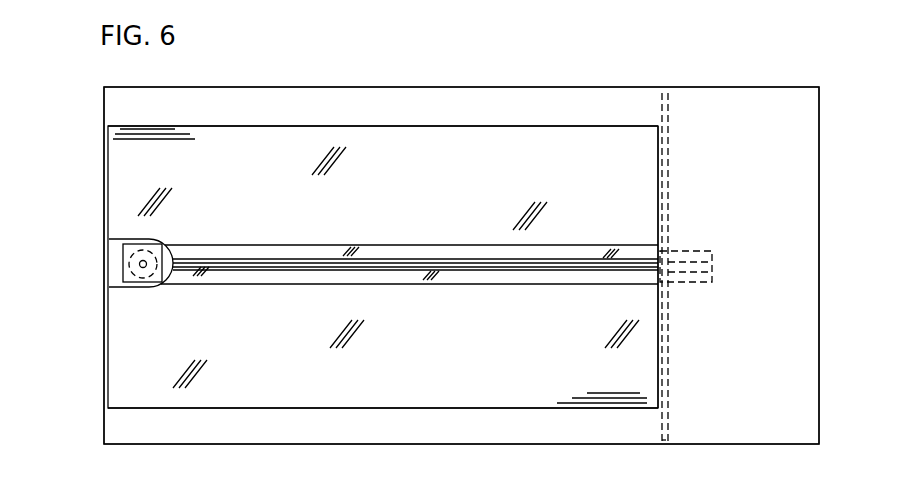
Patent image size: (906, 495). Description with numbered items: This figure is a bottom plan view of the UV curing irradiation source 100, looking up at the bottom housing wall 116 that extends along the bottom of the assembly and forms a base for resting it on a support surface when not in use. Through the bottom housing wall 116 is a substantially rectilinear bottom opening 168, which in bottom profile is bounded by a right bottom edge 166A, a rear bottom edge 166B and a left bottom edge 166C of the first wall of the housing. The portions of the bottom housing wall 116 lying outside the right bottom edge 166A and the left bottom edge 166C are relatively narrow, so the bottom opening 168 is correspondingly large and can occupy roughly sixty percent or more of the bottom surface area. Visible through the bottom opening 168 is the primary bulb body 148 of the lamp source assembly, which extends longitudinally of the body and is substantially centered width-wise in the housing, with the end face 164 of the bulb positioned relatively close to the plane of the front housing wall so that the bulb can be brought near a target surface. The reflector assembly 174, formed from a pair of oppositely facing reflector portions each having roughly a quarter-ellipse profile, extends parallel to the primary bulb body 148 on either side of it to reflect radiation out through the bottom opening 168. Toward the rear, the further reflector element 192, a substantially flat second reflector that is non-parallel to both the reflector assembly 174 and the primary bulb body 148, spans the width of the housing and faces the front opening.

The UV curing irradiation source 100 is at (276, 50).
The bottom housing wall 116 is at (572, 98).
The primary bulb body 148 is at (320, 245).
The end face of the bulb 164 is at (125, 262).
The right bottom edge 166A is at (237, 402).
The rear bottom edge 166B is at (658, 358).
The left bottom edge 166C is at (416, 128).
The bottom opening 168 is at (372, 386).
The reflector assembly 174 is at (126, 185).
The further reflector element 192 is at (668, 418).